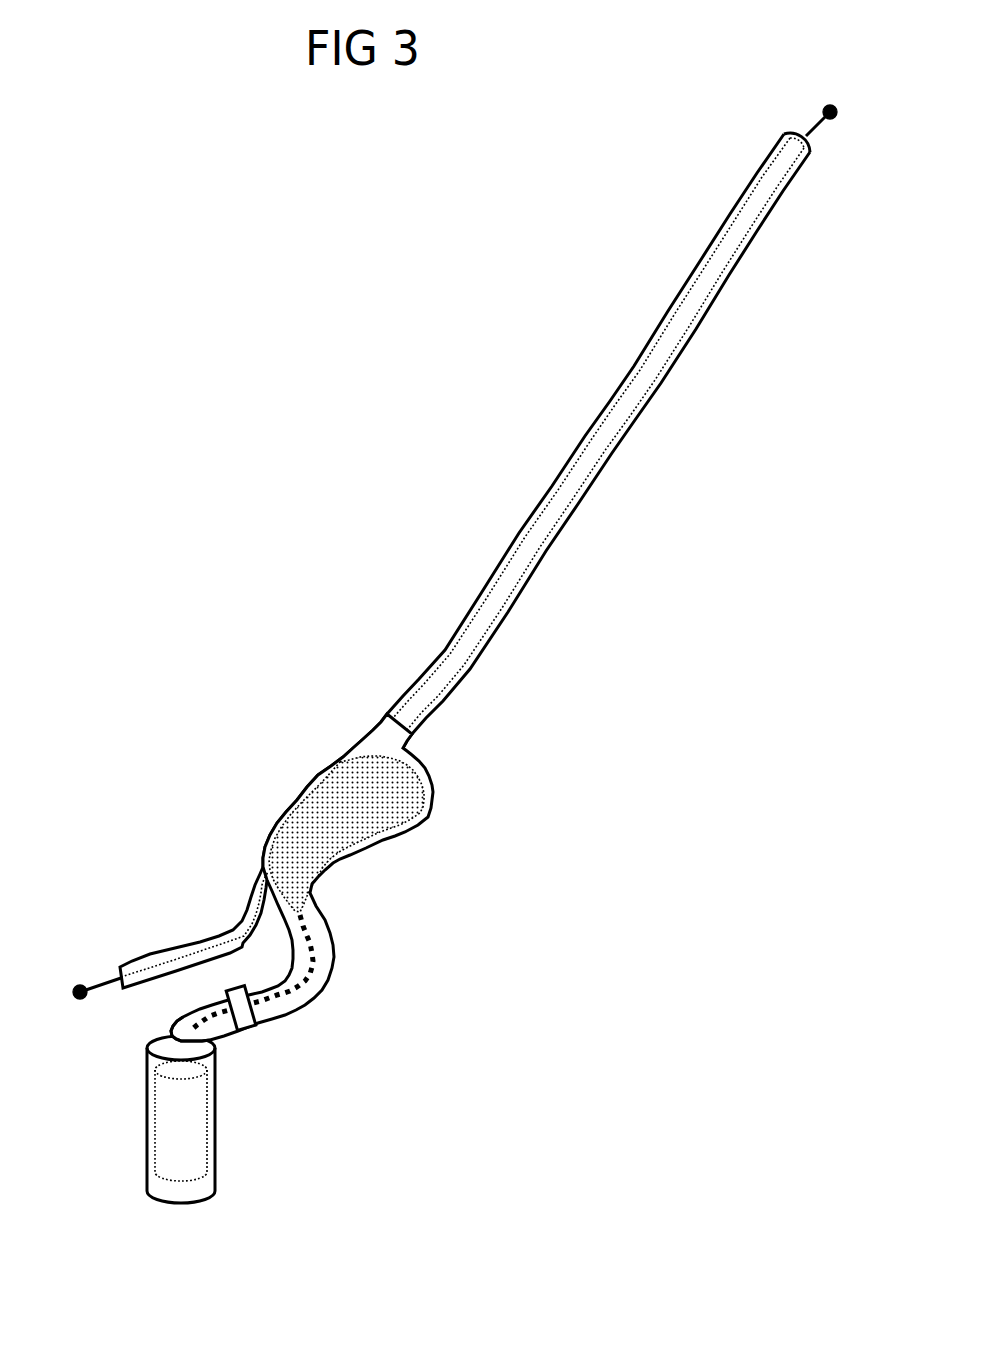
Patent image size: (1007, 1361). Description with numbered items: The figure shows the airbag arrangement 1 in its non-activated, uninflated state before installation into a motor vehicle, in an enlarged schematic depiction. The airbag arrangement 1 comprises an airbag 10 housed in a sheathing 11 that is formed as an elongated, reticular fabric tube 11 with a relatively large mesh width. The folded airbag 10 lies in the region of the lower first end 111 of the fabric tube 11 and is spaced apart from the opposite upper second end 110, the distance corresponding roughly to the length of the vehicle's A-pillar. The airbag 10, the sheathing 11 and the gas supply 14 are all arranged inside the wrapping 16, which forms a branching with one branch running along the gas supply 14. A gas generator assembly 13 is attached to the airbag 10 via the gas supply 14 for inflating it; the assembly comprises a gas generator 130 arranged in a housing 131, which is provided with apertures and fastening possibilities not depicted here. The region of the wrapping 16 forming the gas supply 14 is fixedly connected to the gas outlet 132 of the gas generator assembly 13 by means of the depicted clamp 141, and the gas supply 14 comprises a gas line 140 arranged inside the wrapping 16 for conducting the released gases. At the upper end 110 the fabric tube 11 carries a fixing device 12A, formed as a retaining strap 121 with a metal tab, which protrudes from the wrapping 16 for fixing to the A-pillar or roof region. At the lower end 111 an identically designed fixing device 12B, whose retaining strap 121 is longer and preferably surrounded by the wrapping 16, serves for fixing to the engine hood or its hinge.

The airbag arrangement 1 is at (637, 237).
The airbag 10 is at (330, 797).
The sheathing 11 is at (536, 495).
The second end 110 is at (790, 162).
The first end 111 is at (267, 870).
The retaining strap 121 is at (813, 123).
The fixing device 12A is at (828, 103).
The fixing device 12B is at (77, 1000).
The gas generator assembly 13 is at (232, 1167).
The gas generator 130 is at (187, 1155).
The housing 131 is at (217, 1120).
The gas outlet 132 is at (220, 1035).
The gas supply 14 is at (302, 898).
The gas line 140 is at (317, 953).
The clamp 141 is at (237, 998).
The wrapping 16 is at (507, 558).